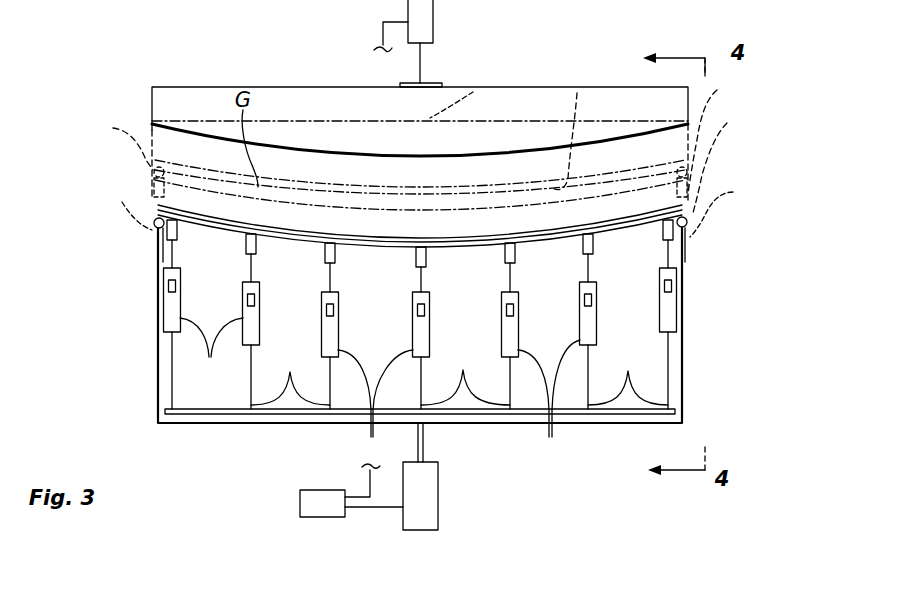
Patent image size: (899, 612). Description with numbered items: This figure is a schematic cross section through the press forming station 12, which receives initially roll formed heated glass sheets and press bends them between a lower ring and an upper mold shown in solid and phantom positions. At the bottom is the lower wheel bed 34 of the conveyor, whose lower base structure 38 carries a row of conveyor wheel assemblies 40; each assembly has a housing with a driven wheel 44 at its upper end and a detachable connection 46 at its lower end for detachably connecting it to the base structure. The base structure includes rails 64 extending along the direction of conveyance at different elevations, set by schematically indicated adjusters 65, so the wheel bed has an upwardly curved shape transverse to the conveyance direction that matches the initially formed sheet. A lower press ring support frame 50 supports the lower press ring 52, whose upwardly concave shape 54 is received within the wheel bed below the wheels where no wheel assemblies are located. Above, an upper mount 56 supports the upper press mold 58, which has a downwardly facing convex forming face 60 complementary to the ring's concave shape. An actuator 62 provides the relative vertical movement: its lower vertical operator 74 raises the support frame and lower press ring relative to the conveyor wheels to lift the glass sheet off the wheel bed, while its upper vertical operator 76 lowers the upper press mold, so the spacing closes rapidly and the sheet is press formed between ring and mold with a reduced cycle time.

The press forming station 12 is at (582, 50).
The lower wheel bed 34 is at (431, 261).
The lower base structure 38 is at (611, 414).
The conveyor wheel assemblies 40 is at (158, 266).
The wheel 44 is at (155, 243).
The detachable connection 46 is at (168, 288).
The lower press ring support frame 50 is at (122, 202).
The lower press ring 52 is at (154, 220).
The upwardly concave shape 54 is at (543, 240).
The upper mount 56 is at (446, 85).
The upper press mold 58 is at (683, 102).
The convex forming face 60 is at (552, 153).
The actuator 62 is at (299, 503).
The rails 64 is at (733, 377).
The adjusters 65 is at (166, 375).
The lower vertical operator 74 is at (440, 500).
The upper vertical operator 76 is at (435, 32).